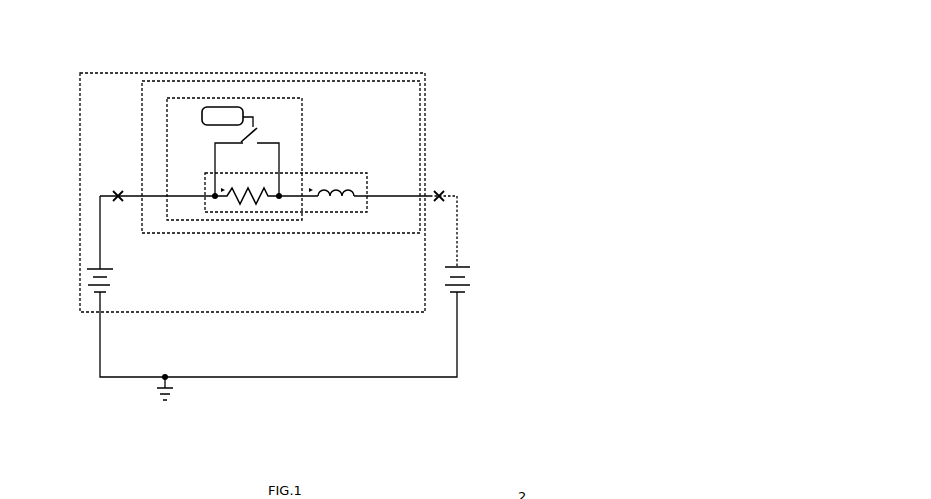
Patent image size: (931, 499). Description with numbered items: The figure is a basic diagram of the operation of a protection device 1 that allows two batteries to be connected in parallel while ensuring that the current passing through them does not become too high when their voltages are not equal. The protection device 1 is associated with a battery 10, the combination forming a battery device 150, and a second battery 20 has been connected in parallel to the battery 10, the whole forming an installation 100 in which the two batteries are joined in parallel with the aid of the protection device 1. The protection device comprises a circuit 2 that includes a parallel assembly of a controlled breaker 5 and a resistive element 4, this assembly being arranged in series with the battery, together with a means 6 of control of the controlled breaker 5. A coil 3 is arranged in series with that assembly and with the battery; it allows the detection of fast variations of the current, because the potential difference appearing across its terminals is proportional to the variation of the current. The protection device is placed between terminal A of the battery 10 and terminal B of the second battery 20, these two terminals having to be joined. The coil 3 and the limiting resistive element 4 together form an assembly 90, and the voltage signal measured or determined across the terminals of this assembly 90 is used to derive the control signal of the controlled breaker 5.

The protection device 1 is at (425, 103).
The circuit 2 is at (303, 127).
The coil 3 is at (339, 187).
The resistive element 4 is at (252, 200).
The controlled breaker 5 is at (258, 138).
The means of control 6 is at (202, 110).
The battery 10 is at (98, 267).
The second battery 20 is at (467, 267).
The assembly 90 is at (368, 187).
The installation 100 is at (497, 165).
The battery device 150 is at (402, 73).